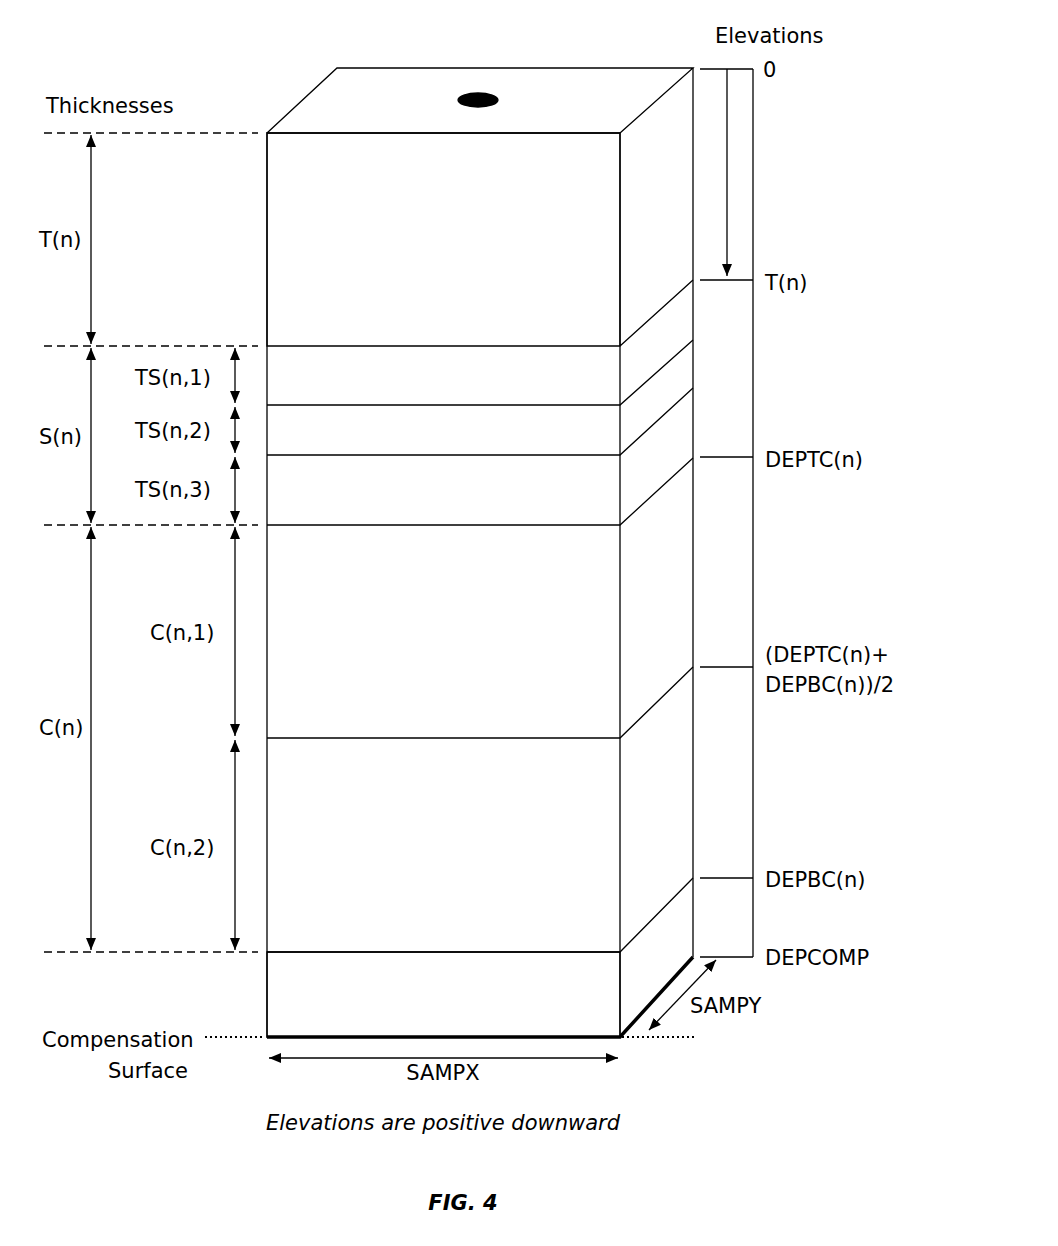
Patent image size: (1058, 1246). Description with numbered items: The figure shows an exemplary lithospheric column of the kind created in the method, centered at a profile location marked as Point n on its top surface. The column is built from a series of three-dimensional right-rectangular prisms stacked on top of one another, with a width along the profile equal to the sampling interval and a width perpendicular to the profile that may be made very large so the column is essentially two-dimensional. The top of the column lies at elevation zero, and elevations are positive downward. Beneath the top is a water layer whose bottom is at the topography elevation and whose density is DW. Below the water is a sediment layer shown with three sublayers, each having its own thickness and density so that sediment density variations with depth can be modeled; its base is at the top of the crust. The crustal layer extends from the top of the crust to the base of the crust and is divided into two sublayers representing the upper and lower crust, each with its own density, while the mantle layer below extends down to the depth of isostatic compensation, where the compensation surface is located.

The density of water DW is at (480, 239).
The column location Point n is at (477, 92).